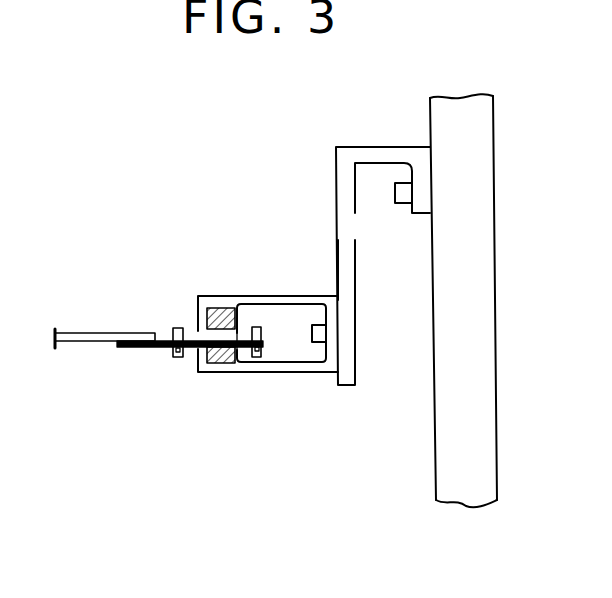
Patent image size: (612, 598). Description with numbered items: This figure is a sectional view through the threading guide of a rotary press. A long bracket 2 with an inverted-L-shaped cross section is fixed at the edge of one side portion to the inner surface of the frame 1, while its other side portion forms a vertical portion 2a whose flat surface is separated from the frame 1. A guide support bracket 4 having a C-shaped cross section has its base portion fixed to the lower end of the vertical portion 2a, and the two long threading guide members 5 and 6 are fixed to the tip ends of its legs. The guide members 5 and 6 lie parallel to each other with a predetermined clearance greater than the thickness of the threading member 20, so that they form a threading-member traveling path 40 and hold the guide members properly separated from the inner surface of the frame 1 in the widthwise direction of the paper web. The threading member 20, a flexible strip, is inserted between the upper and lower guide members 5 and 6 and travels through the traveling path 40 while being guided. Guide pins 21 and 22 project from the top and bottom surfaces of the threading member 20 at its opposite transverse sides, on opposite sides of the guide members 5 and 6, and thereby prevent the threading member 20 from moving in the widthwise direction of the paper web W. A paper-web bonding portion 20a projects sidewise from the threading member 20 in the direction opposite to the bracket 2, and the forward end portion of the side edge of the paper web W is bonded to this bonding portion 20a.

The frame 1 is at (430, 118).
The bracket 2 is at (360, 146).
The vertical portion 2a is at (345, 265).
The guide support bracket 4 is at (243, 295).
The threading member 20 is at (270, 341).
The paper-web bonding portion 20a is at (127, 347).
The guide pins 21 is at (257, 358).
The guide pins 22 is at (178, 357).
The threading-member traveling path 40 is at (243, 328).
The threading guide member 5 is at (199, 362).
The threading guide member 6 is at (200, 323).
The paper web W is at (90, 336).